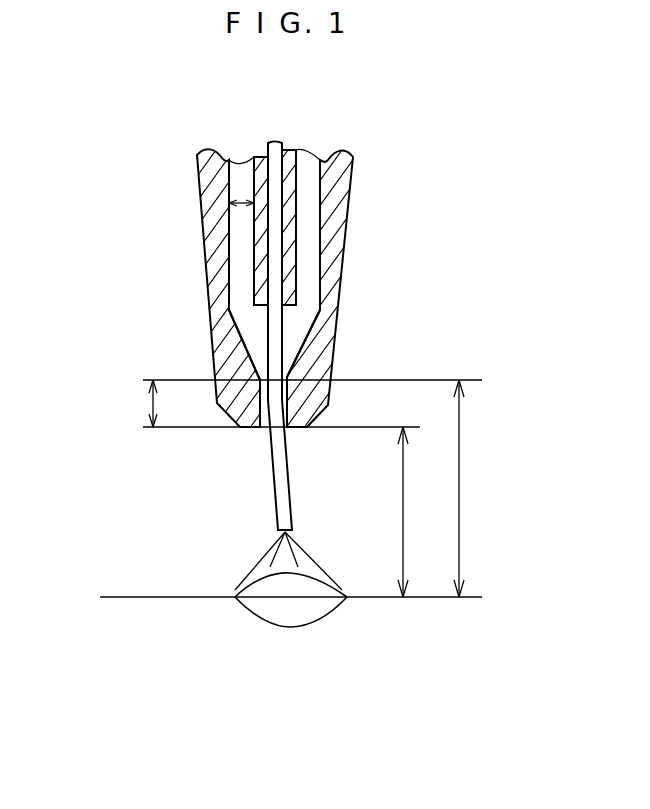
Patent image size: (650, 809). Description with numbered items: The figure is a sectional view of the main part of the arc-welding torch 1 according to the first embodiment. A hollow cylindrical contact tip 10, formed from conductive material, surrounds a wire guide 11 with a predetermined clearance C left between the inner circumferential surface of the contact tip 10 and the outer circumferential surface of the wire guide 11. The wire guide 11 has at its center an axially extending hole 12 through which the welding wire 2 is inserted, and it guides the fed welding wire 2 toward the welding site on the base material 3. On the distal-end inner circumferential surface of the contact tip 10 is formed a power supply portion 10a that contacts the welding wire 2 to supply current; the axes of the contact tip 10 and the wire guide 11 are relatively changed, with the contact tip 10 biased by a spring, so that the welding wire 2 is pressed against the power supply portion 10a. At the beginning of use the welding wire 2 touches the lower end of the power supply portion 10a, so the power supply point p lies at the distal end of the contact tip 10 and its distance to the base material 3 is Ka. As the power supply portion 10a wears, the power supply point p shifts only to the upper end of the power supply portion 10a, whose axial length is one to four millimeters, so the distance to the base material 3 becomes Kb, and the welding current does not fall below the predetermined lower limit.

The arc-welding torch 1 is at (259, 286).
The contact tip 10 is at (213, 235).
The power supply portion 10a is at (290, 394).
The wire guide 11 is at (298, 232).
The hole 12 is at (278, 192).
The welding wire 2 is at (282, 330).
The base material 3 is at (168, 597).
The clearance C is at (243, 200).
The power supply point p is at (292, 421).
The distance between power supply point and base material at beginning of use Ka is at (312, 488).
The distance between power supply point and base material after wear Kb is at (476, 488).